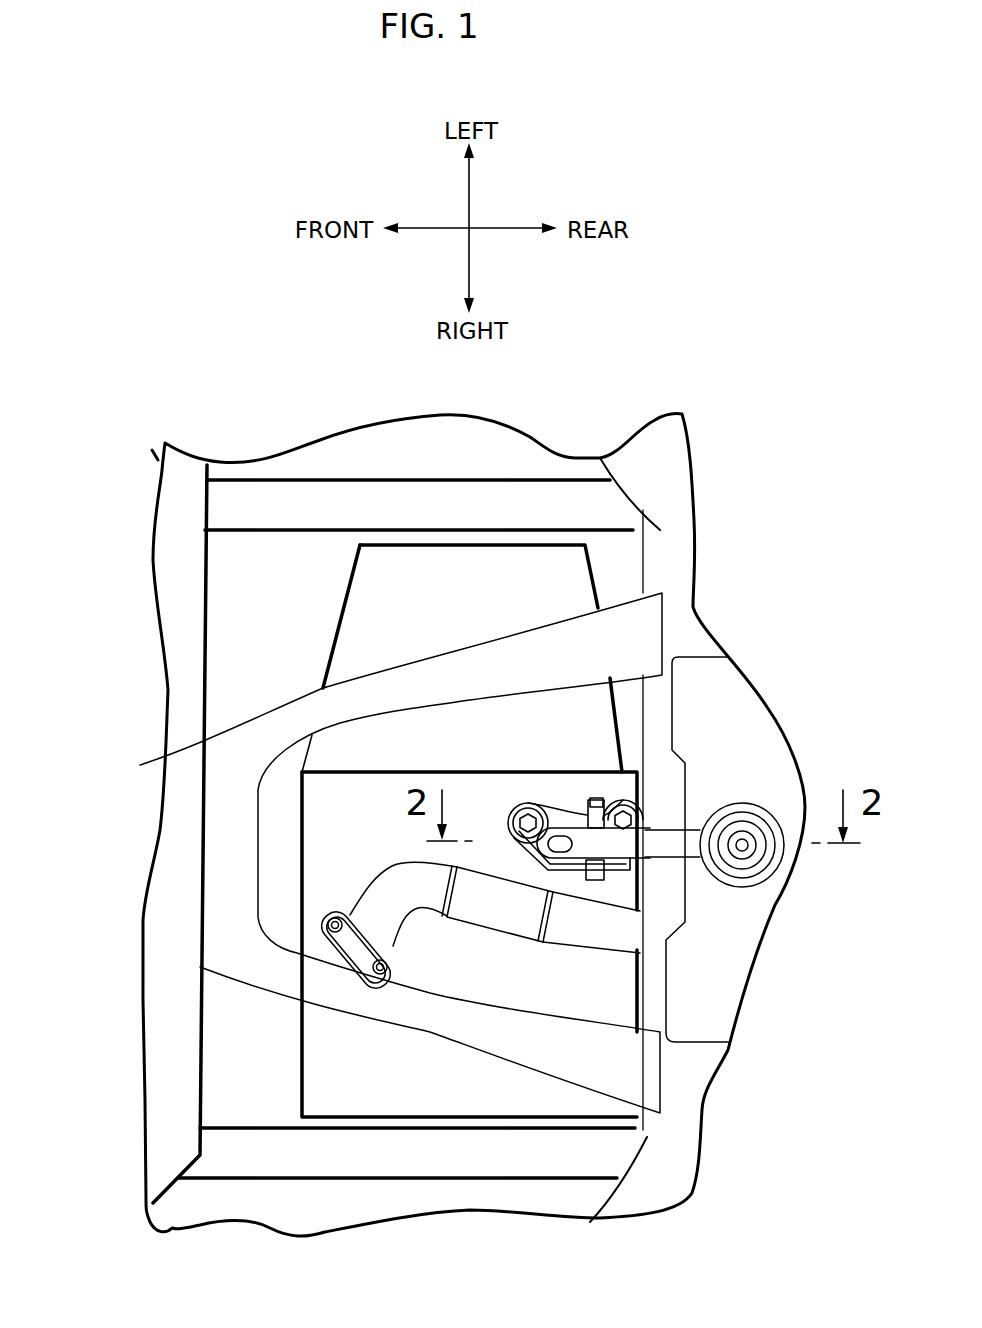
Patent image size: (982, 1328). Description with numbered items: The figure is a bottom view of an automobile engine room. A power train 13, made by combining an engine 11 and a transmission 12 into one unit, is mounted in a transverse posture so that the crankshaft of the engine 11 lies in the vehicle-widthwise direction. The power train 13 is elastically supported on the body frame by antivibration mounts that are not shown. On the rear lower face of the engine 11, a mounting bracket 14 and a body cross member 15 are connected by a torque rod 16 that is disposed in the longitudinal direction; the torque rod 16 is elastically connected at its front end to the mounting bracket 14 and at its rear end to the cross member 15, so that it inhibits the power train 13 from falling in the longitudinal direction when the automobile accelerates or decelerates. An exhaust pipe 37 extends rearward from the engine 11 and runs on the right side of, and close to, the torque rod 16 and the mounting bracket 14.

The engine 11 is at (278, 824).
The transmission 12 is at (298, 667).
The power train 13 is at (85, 772).
The mounting bracket 14 is at (547, 802).
The body cross member 15 is at (712, 773).
The torque rod 16 is at (613, 848).
The exhaust pipe 37 is at (577, 935).